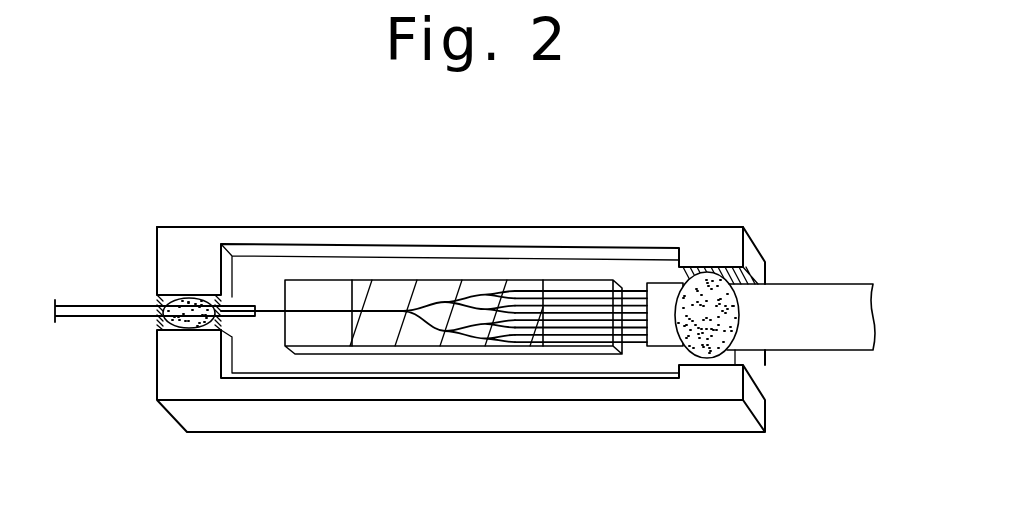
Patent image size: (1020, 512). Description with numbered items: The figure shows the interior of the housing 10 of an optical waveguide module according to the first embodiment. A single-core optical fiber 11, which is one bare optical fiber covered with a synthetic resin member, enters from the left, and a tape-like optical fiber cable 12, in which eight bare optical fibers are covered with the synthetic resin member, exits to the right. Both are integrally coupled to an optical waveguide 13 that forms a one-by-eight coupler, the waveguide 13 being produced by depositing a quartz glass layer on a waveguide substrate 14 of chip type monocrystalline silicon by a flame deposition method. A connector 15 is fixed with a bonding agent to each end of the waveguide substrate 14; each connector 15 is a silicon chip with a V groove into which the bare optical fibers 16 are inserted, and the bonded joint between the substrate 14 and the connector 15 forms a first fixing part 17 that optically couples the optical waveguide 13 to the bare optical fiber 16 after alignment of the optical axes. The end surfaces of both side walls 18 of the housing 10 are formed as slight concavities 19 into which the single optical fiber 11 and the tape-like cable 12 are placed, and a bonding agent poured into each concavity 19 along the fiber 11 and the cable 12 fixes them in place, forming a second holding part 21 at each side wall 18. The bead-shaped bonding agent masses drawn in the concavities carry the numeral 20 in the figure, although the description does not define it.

The housing 10 is at (444, 216).
The single-core optical fiber 11 is at (86, 294).
The tape-like optical fiber cable 12 is at (832, 274).
The optical waveguide 13 is at (504, 293).
The waveguide substrate 14 is at (404, 279).
The connector 15 is at (296, 279).
The bare optical fiber 16 is at (318, 309).
The first fixing part 17 is at (345, 268).
The side wall 18 is at (157, 378).
The concavity 19 is at (162, 323).
The sealing resin 20 is at (179, 297).
The second holding part 21 is at (192, 284).